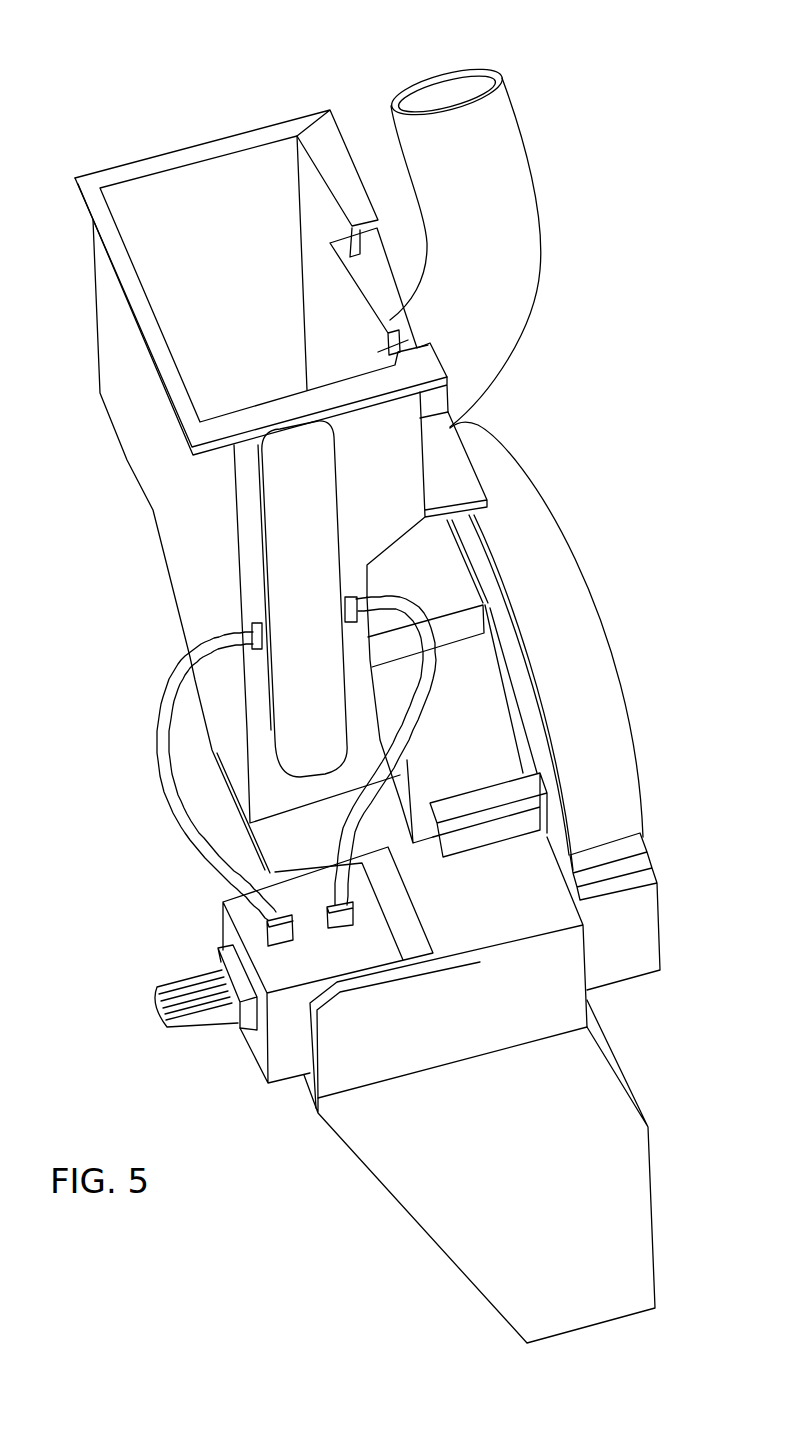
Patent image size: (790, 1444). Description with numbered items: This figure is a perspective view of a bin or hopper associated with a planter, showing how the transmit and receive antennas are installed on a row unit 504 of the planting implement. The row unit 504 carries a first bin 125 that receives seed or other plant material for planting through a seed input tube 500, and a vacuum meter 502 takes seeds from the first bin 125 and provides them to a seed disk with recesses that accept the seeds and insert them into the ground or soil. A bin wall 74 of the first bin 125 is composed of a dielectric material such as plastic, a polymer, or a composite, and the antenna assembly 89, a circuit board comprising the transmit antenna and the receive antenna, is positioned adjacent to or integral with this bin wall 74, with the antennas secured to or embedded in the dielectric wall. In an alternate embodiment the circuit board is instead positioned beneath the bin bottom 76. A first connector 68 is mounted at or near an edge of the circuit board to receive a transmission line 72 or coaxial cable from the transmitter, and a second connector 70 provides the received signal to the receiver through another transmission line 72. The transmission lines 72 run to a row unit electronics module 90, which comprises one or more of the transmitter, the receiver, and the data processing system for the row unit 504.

The first bin 125 is at (167, 163).
The seed input tube 500 is at (467, 87).
The vacuum meter 502 is at (492, 472).
The row unit 504 is at (600, 550).
The antenna assembly 89 is at (293, 477).
The bin wall 74 is at (253, 537).
The second connector 70 is at (345, 608).
The first connector 68 is at (262, 633).
The transmission line 72 is at (188, 815).
The bin bottom 76 is at (295, 837).
The row unit electronics module 90 is at (252, 1047).